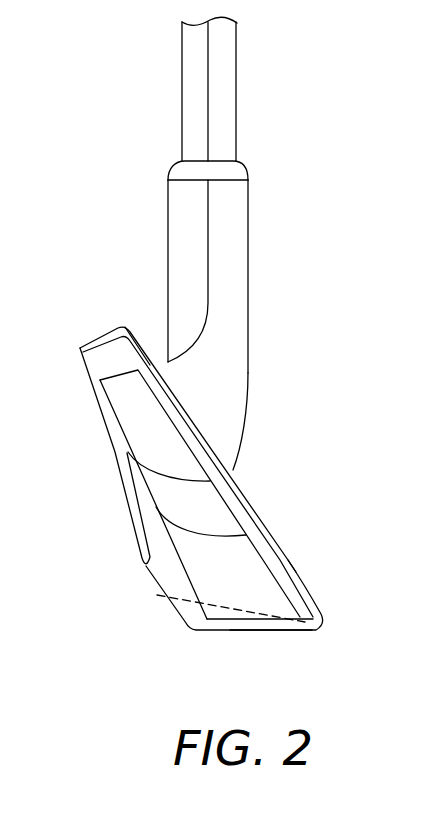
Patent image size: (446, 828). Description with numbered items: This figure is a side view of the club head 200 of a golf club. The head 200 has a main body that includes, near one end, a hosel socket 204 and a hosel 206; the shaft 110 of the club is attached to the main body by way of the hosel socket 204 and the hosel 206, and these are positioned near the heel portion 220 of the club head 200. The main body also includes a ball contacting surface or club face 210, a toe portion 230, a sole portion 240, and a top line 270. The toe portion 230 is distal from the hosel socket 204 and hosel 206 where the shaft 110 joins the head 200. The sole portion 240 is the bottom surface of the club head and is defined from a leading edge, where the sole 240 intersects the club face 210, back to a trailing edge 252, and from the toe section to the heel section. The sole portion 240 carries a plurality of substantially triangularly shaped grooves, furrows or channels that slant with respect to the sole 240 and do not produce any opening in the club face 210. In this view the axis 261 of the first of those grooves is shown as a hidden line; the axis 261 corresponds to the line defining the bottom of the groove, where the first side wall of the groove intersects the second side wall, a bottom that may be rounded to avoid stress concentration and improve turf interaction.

The shaft 110 is at (237, 80).
The hosel 206 is at (240, 164).
The hosel socket 204 is at (232, 258).
The club head 200 is at (243, 361).
The heel portion 220 is at (243, 432).
The top line 270 is at (123, 325).
The toe portion 230 is at (207, 572).
The trailing edge 252 is at (190, 630).
The club face 210 is at (296, 562).
The axis 261 is at (223, 607).
The sole portion 240 is at (255, 632).